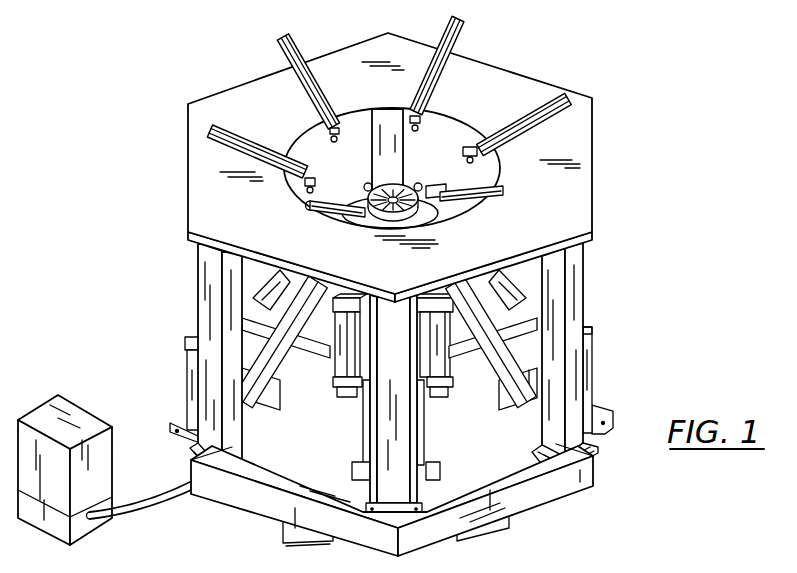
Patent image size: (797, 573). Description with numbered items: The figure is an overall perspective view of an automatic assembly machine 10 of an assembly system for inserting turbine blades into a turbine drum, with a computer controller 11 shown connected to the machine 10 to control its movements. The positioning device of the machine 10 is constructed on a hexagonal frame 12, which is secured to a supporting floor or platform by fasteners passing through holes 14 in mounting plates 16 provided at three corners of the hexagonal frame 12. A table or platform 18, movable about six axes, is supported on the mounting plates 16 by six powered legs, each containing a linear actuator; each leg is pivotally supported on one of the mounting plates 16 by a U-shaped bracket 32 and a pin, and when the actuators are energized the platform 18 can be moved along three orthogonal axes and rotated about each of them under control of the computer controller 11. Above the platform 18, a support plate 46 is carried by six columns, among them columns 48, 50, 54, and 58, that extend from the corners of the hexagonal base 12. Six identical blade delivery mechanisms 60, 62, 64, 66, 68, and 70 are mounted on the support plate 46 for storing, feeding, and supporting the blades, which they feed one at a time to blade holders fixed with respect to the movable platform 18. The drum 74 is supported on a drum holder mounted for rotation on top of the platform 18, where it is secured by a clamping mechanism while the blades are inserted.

The automatic assembly machine 10 is at (366, 293).
The computer controller 11 is at (47, 408).
The hexagonal frame 12 is at (435, 507).
The holes 14 is at (293, 526).
The mounting plates 16 is at (305, 545).
The table or platform 18 is at (440, 192).
The U-shaped bracket 32 is at (270, 386).
The support plate 46 is at (553, 163).
The column 48 is at (398, 424).
The column 50 is at (583, 301).
The column 54 is at (388, 144).
The column 58 is at (207, 263).
The blade delivery mechanism 60 is at (552, 97).
The blade delivery mechanism 62 is at (465, 28).
The blade delivery mechanism 64 is at (278, 43).
The blade delivery mechanism 66 is at (207, 135).
The blade delivery mechanism 68 is at (348, 223).
The blade delivery mechanism 70 is at (507, 191).
The drum 74 is at (393, 186).